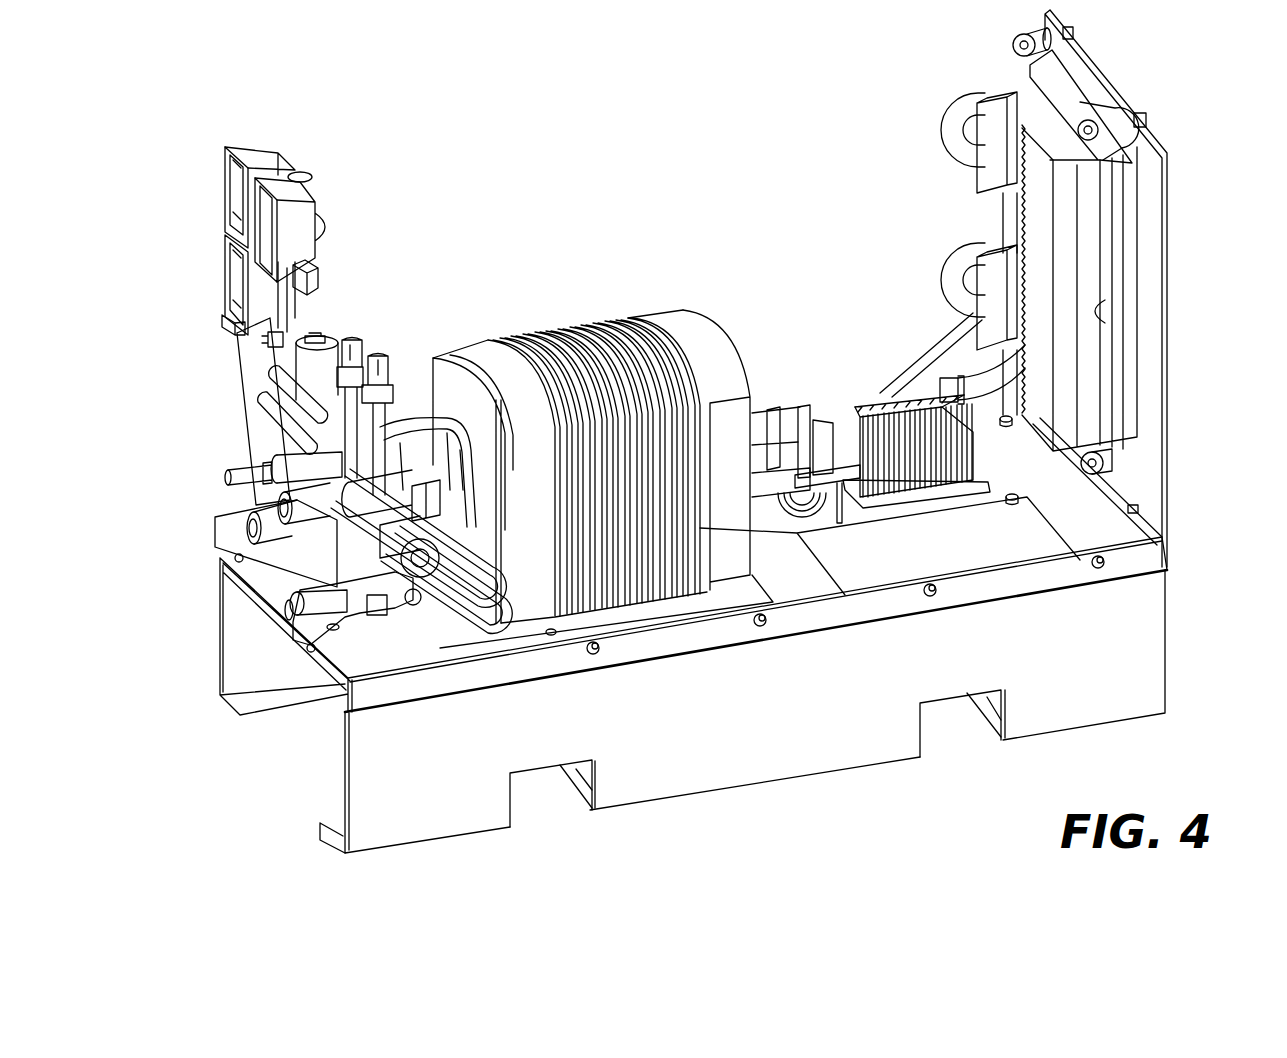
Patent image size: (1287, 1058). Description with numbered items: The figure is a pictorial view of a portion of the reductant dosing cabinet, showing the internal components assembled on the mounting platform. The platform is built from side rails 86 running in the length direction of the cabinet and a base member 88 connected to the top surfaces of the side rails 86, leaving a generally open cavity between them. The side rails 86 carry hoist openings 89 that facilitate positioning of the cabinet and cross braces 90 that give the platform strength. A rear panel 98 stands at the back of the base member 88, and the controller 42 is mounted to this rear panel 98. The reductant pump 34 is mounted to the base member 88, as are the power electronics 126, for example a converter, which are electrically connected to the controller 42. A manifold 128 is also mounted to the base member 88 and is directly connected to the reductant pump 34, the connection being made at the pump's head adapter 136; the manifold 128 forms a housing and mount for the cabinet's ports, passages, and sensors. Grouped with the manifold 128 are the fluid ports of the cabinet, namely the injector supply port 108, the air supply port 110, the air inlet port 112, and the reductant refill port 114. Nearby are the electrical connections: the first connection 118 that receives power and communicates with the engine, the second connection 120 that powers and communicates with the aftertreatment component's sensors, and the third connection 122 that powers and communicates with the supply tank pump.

The reductant pump 34 is at (477, 357).
The controller 42 is at (1097, 358).
The side rails 86 is at (218, 640).
The base member 88 is at (1147, 560).
The hoist openings 89 is at (541, 787).
The cross braces 90 is at (577, 775).
The rear panel 98 is at (1147, 258).
The injector supply port 108 is at (245, 512).
The air supply port 110 is at (292, 537).
The air inlet port 112 is at (237, 477).
The reductant refill port 114 is at (285, 633).
The first connection 118 is at (236, 264).
The second connection 120 is at (252, 163).
The third connection 122 is at (267, 217).
The power electronics 126 is at (888, 410).
The manifold 128 is at (409, 380).
The head adapter 136 is at (425, 440).